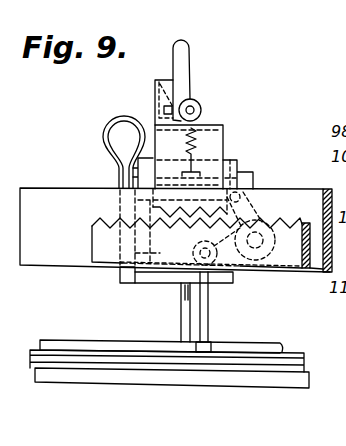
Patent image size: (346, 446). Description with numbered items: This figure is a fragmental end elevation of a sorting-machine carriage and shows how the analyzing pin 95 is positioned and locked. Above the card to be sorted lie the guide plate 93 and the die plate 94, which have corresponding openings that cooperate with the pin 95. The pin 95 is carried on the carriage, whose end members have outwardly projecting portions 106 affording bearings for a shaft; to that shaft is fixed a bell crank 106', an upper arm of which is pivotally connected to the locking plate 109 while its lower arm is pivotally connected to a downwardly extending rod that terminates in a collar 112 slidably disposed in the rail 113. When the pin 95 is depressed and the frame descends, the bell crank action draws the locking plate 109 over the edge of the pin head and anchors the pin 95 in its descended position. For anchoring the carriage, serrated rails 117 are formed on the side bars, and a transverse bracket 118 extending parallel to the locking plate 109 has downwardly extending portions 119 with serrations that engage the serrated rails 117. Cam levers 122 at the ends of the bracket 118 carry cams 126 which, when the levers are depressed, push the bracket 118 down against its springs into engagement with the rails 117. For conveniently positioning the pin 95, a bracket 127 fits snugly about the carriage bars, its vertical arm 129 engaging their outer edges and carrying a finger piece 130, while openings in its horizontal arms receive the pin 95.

The guide plate 93 is at (313, 351).
The die plate 94 is at (284, 380).
The analyzing pin 95 is at (183, 307).
The outwardly projecting portion 106 is at (220, 254).
The bell crank 106' is at (233, 276).
The locking plate 109 is at (145, 115).
The collar 112 is at (210, 350).
The rail 113 is at (158, 328).
The serrated rail 117 is at (101, 236).
The transverse bracket 118 is at (214, 123).
The downwardly extending portion 119 is at (218, 142).
The cam lever 122 is at (182, 64).
The cam 126 is at (156, 83).
The bracket 127 is at (108, 176).
The vertical arm 129 is at (127, 284).
The finger piece 130 is at (116, 128).